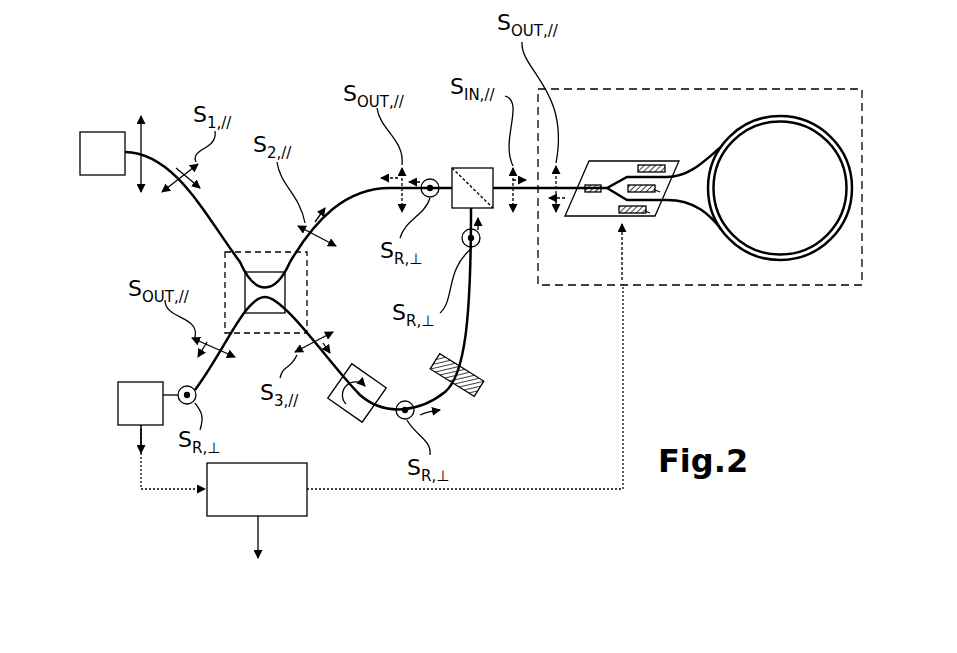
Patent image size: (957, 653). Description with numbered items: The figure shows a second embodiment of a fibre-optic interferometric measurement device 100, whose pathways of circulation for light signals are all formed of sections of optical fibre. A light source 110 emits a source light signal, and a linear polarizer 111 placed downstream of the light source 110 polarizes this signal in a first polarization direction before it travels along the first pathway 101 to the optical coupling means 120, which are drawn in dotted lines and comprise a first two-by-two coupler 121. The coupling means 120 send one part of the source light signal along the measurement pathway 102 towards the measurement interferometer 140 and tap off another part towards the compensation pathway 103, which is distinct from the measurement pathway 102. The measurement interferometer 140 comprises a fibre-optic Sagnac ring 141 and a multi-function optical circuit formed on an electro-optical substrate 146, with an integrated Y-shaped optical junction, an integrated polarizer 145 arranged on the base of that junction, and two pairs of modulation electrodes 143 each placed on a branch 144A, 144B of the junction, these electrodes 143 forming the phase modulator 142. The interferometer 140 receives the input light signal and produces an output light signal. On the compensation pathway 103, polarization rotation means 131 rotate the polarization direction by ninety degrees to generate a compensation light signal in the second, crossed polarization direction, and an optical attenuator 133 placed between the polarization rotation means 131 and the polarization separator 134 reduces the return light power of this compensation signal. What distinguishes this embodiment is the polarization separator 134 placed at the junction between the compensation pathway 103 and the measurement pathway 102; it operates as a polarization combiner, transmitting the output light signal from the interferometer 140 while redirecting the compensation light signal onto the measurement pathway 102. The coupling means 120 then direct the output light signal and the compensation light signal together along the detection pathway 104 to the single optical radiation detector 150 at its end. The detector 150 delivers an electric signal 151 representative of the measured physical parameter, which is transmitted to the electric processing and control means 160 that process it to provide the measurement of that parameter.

The interferometric measurement device 100 is at (582, 512).
The first pathway 101 is at (205, 222).
The measurement pathway 102 is at (367, 190).
The compensation pathway 103 is at (478, 297).
The detection pathway 104 is at (215, 372).
The light source 110 is at (105, 131).
The linear polarizer 111 is at (142, 118).
The optical coupling means 120 is at (313, 302).
The first two-by-two coupler 121 is at (265, 271).
The polarization rotation means 131 is at (343, 413).
The optical attenuator 133 is at (480, 366).
The polarization separator 134 is at (472, 167).
The measurement interferometer 140 is at (787, 289).
The fibre-optic Sagnac ring 141 is at (779, 114).
The phase modulator 142 is at (668, 165).
The modulation electrodes 143 is at (650, 212).
The first branch of the Y-junction 144A is at (630, 164).
The second branch of the Y-junction 144B is at (612, 217).
The integrated polarizer 145 is at (597, 216).
The electro-optical substrate 146 is at (610, 160).
The optical radiation detector 150 is at (141, 381).
The electric signal 151 is at (141, 460).
The electric processing and control means 160 is at (228, 517).